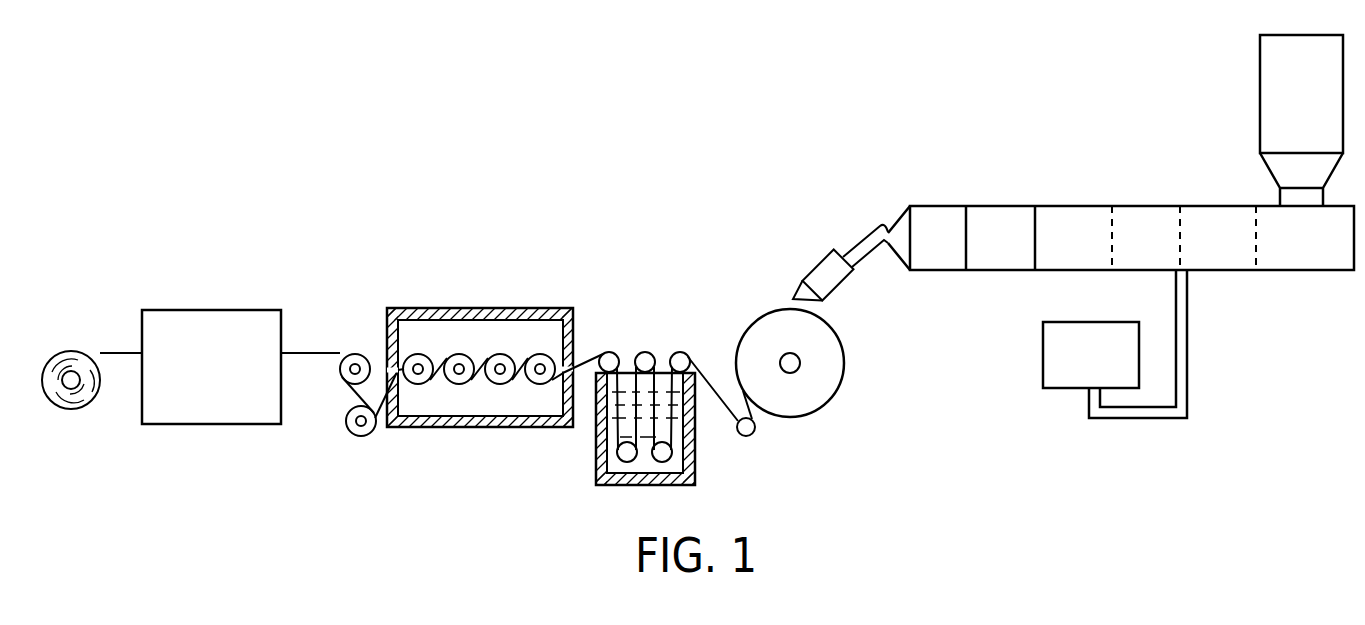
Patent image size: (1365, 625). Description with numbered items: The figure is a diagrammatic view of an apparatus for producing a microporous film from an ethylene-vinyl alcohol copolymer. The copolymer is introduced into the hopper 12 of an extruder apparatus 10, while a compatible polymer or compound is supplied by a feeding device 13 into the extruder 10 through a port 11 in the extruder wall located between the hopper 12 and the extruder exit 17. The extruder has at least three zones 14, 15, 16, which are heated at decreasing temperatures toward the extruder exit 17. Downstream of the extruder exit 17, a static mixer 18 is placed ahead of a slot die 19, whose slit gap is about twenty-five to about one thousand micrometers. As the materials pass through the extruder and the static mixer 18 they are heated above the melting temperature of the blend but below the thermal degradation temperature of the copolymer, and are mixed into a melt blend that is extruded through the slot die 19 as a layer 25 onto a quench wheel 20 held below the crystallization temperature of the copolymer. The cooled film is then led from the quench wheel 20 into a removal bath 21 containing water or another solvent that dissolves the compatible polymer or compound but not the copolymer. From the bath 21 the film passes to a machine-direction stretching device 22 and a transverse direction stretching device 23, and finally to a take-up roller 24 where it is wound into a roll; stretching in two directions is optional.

The extruder apparatus 10 is at (984, 200).
The port 11 is at (1189, 274).
The hopper 12 is at (1273, 61).
The feeding device 13 is at (1059, 377).
The first zone 14 is at (1210, 218).
The second zone 15 is at (1145, 220).
The third zone 16 is at (1073, 218).
The extruder exit 17 is at (997, 220).
The static mixer 18 is at (937, 218).
The slot die 19 is at (823, 272).
The quench wheel 20 is at (838, 390).
The removal bath 21 is at (596, 455).
The machine-direction stretching device 22 is at (509, 308).
The transverse direction stretching device 23 is at (209, 310).
The take-up roller 24 is at (62, 357).
The layer 25 is at (785, 307).